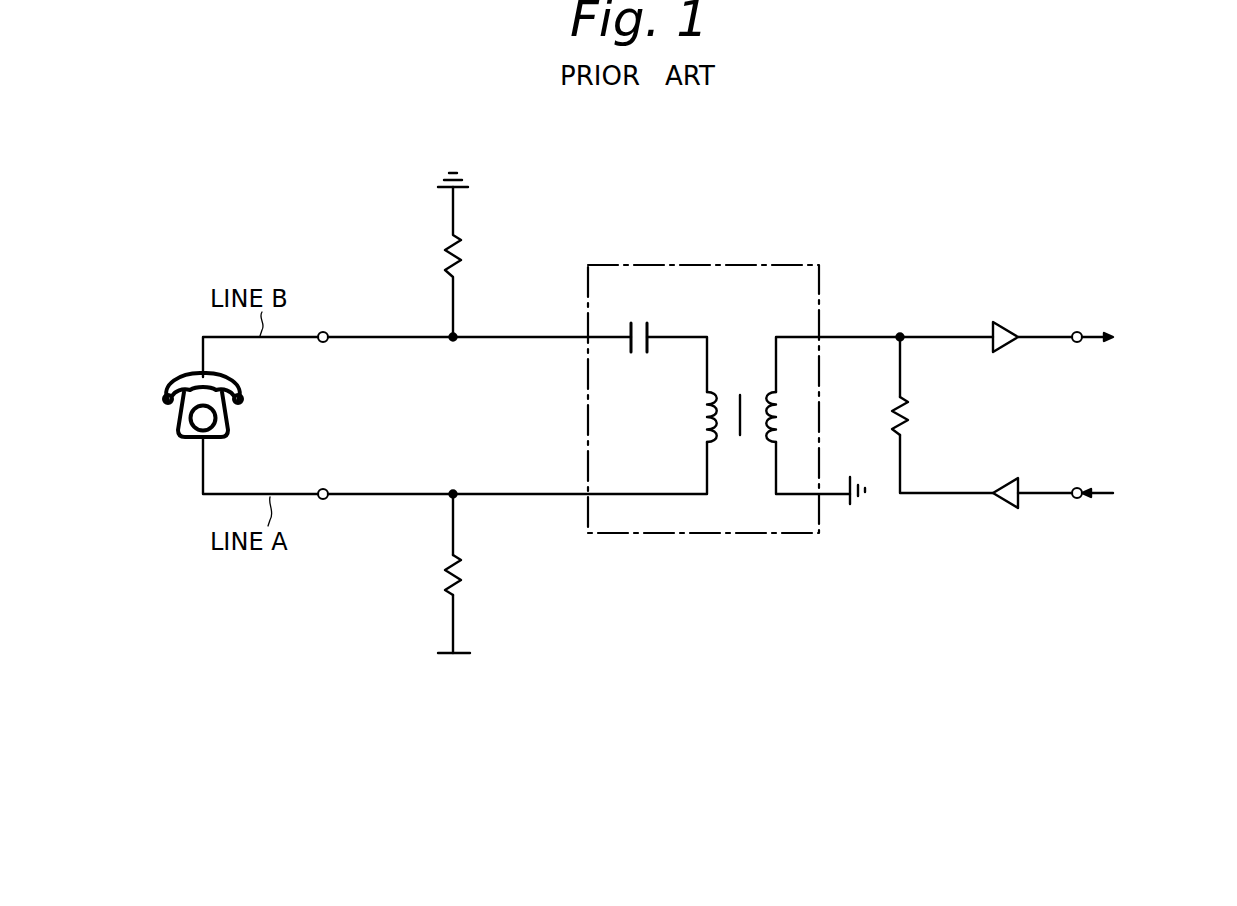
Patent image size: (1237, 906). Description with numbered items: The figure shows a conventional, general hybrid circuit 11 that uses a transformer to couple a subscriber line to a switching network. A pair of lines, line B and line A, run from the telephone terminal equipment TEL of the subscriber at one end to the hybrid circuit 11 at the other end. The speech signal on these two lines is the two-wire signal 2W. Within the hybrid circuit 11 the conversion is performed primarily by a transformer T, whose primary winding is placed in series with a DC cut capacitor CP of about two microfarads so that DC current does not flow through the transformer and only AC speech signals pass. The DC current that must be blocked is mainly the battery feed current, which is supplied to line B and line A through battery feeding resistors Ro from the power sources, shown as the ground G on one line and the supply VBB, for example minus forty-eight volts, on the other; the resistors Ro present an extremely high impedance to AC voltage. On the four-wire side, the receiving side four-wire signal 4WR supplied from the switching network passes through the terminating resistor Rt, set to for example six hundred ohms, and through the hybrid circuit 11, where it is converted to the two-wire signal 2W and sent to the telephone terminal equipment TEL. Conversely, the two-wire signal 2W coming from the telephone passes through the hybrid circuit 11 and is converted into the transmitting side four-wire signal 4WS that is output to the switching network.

The hybrid circuit 11 is at (745, 264).
The transformer T is at (748, 330).
The DC cut capacitor CP is at (640, 318).
The terminating resistor Rt is at (917, 412).
The battery feeding resistor Ro is at (446, 258).
The telephone terminal equipment TEL is at (177, 430).
The two-wire signal 2W is at (269, 414).
The ground G is at (464, 183).
The battery supply voltage VBB is at (477, 654).
The transmitting side four-wire signal 4WS is at (1154, 341).
The receiving side four-wire signal 4WR is at (1158, 495).